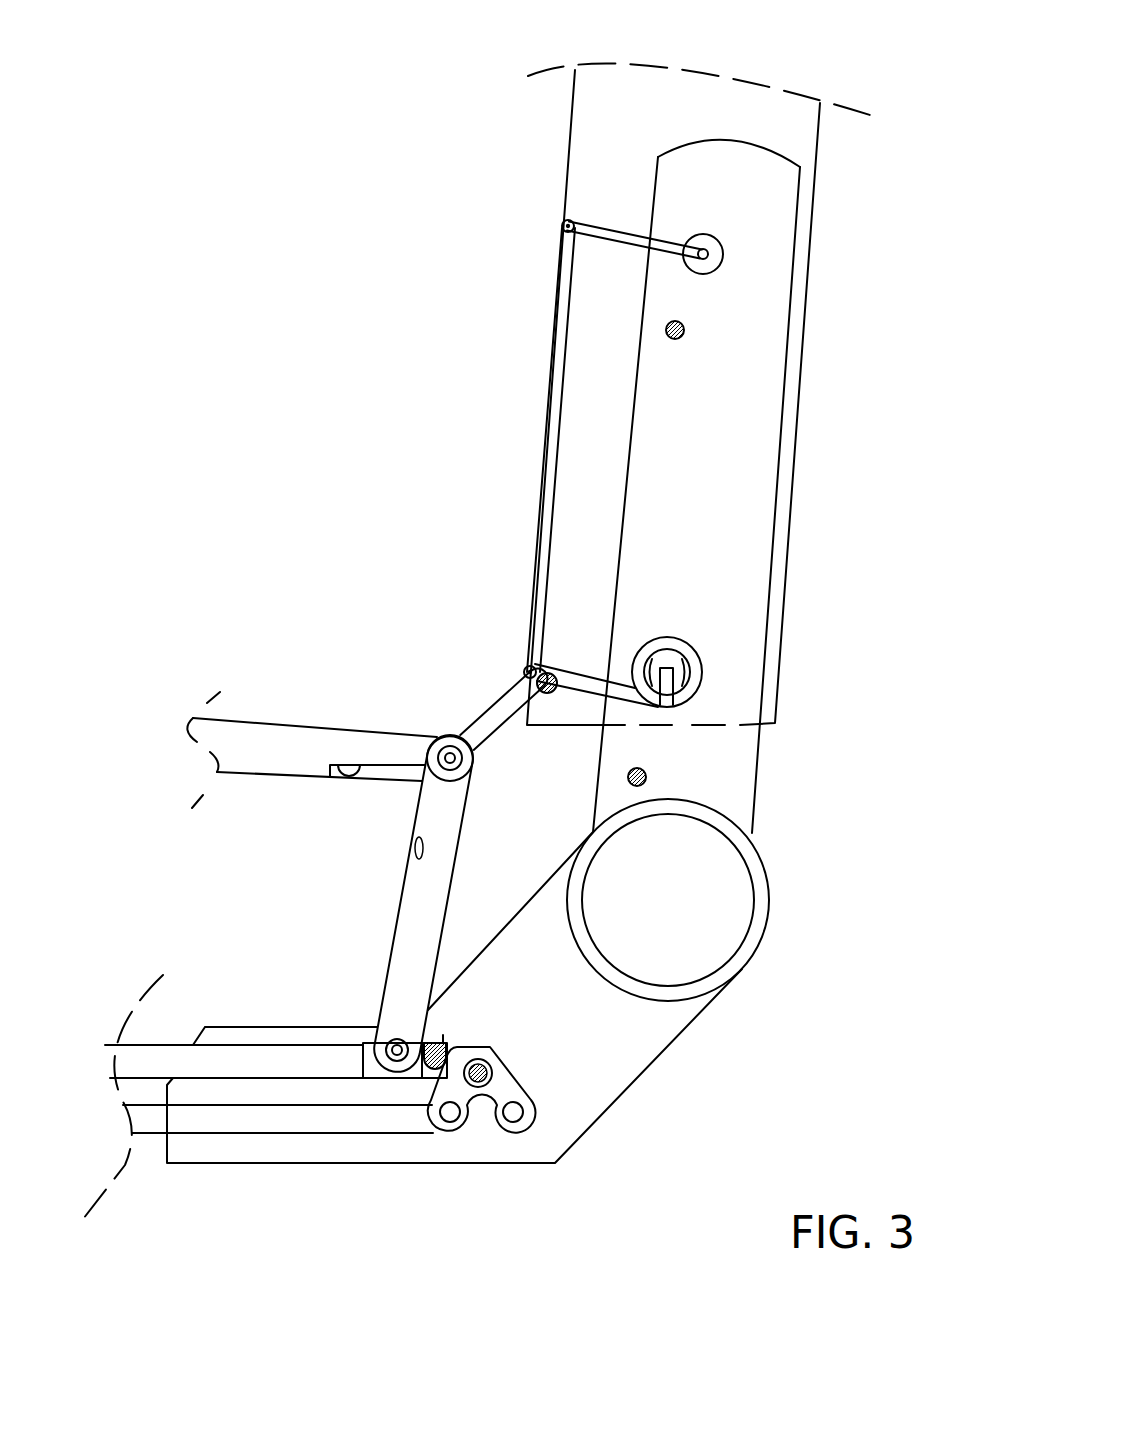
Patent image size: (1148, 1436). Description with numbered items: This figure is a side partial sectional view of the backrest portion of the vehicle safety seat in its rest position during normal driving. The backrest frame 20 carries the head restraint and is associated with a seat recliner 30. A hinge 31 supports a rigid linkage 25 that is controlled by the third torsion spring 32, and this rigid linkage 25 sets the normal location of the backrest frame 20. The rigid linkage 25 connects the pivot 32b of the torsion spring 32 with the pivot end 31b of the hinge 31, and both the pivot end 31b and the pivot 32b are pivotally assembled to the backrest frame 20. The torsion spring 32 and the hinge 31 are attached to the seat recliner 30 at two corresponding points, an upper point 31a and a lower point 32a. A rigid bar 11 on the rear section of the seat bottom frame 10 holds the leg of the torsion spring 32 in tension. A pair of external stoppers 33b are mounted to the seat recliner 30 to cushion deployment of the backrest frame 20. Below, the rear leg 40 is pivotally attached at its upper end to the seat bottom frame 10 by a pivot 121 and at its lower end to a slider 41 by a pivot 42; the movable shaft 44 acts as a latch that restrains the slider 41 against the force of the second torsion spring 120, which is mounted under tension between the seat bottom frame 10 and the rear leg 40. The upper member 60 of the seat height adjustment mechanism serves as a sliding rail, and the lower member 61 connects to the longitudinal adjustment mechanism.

The seat bottom frame 10 is at (275, 762).
The rigid bar 11 is at (550, 693).
The backrest frame 20 is at (608, 457).
The rigid linkage 25 is at (550, 452).
The seat recliner 30 is at (723, 495).
The hinge 31 is at (628, 240).
The upper point 31a is at (722, 252).
The pivot end 31b is at (562, 230).
The third torsion spring 32 is at (593, 683).
The lower point 32a is at (665, 662).
The pivot 32b is at (525, 668).
The external stoppers 33b is at (685, 330).
The rear leg 40 is at (432, 947).
The slider 41 is at (365, 1058).
The pivot 42 is at (395, 1060).
The movable shaft 44 is at (448, 1043).
The upper member of the seat height adjustment mechanism 60 is at (233, 1065).
The lower member of the seat height adjustment mechanism 61 is at (240, 1120).
The second torsion spring 120 is at (383, 777).
The pivot 121 is at (447, 753).